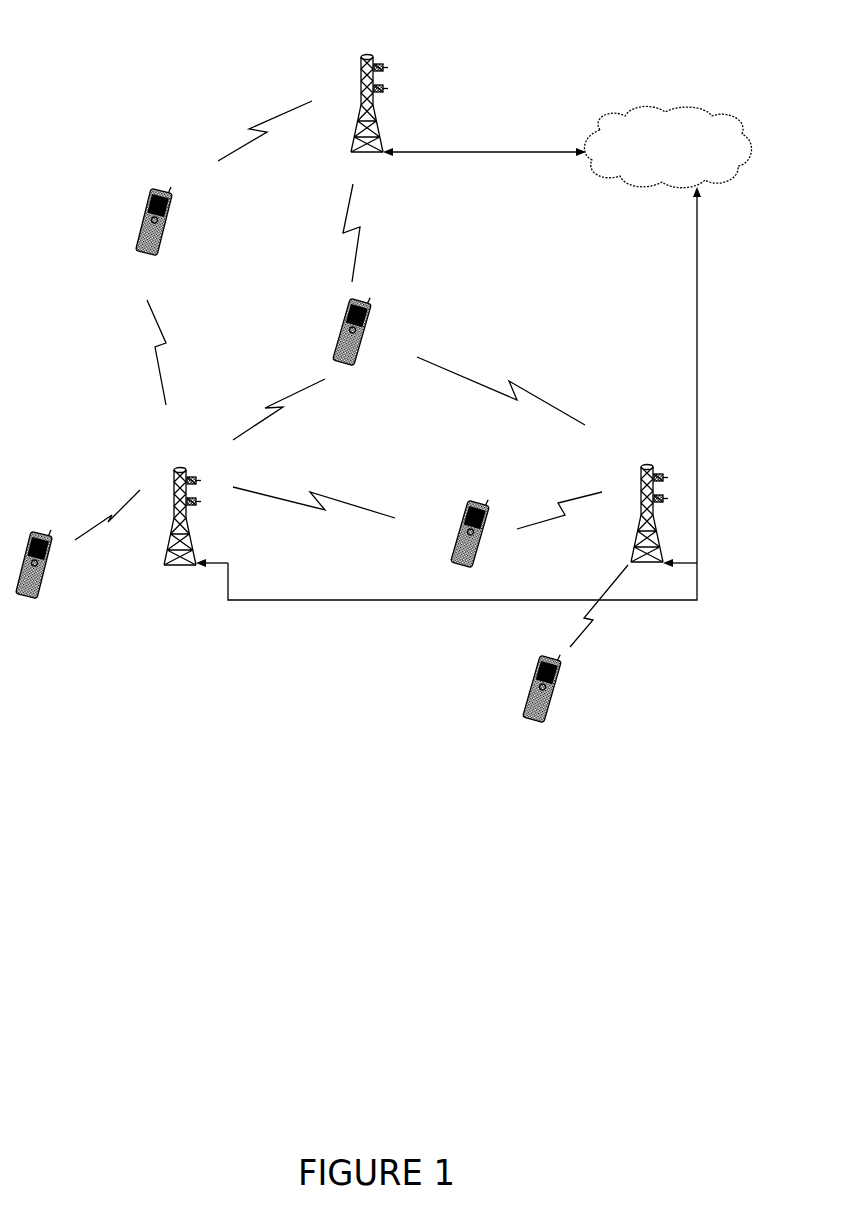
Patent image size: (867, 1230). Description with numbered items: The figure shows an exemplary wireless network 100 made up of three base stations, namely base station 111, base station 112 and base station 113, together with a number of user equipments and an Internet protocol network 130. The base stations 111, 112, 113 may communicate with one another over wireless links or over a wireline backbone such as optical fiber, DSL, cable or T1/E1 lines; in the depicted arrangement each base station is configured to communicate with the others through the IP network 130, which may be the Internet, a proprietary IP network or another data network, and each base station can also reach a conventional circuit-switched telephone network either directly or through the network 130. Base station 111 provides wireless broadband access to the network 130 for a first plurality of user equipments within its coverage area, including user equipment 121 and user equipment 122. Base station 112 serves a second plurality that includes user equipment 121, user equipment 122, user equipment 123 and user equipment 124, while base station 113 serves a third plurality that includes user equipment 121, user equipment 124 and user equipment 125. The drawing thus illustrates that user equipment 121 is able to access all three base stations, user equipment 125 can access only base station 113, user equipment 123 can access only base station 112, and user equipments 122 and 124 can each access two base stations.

The wireless network 100 is at (219, 844).
The base station 111 is at (368, 53).
The base station 112 is at (180, 466).
The base station 113 is at (647, 464).
The user equipment 121 is at (364, 338).
The user equipment 122 is at (168, 228).
The user equipment 123 is at (46, 566).
The user equipment 124 is at (468, 508).
The user equipment 125 is at (525, 710).
The Internet protocol network 130 is at (678, 108).